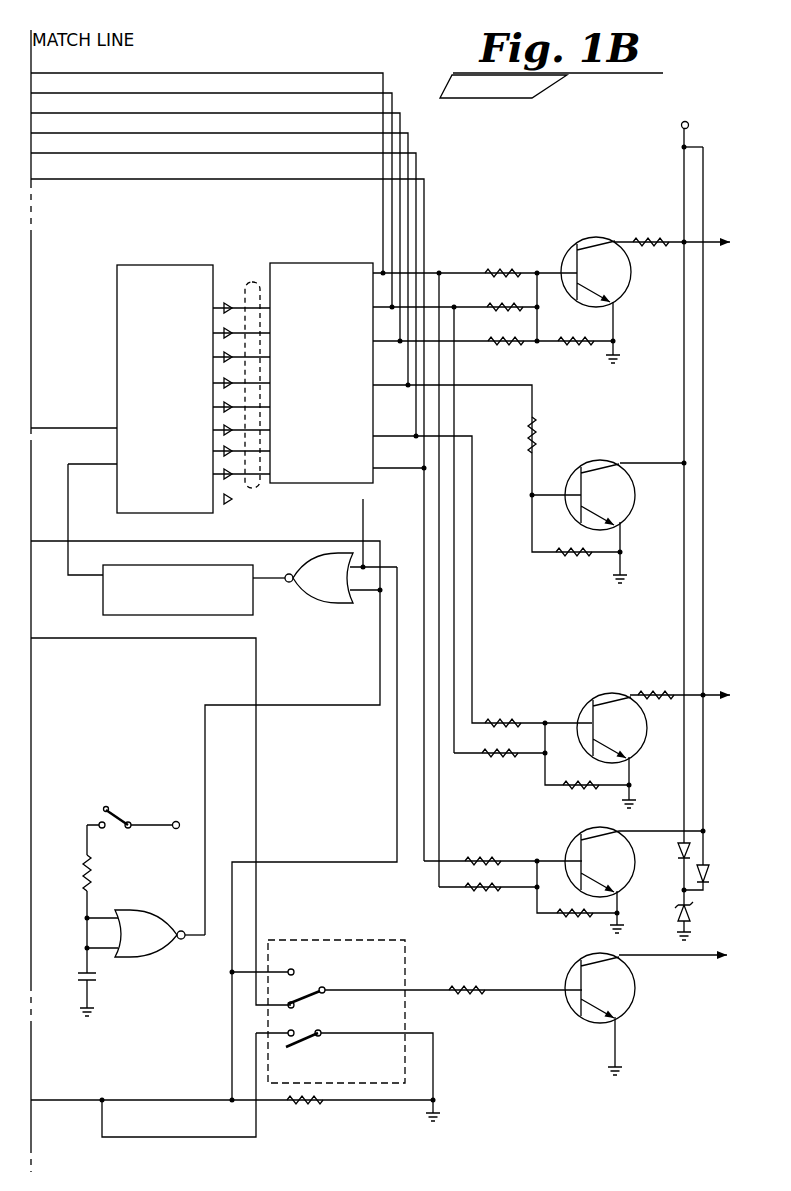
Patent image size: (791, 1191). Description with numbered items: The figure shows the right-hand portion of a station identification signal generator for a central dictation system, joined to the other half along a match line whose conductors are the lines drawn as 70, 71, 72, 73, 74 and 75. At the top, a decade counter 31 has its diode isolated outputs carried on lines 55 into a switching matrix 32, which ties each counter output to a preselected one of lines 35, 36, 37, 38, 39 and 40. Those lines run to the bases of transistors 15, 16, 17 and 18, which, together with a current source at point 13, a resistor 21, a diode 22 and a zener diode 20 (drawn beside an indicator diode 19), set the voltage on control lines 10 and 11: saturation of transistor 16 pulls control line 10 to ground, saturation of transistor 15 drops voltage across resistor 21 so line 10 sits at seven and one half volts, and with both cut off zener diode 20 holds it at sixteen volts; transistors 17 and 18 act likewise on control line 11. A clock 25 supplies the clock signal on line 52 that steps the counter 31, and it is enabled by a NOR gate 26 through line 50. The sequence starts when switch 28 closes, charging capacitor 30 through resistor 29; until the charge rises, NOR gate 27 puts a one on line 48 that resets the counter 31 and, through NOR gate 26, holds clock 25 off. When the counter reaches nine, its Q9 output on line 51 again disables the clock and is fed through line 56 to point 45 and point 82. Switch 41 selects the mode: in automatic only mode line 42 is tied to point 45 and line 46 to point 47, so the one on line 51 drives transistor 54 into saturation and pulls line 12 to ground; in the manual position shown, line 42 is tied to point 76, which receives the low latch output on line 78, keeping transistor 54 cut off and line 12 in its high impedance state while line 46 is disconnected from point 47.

The control line 10 is at (718, 238).
The control line 11 is at (720, 688).
The line 12 is at (693, 958).
The point 13 is at (681, 124).
The transistor 15 is at (595, 238).
The transistor 16 is at (600, 460).
The transistor 17 is at (606, 692).
The transistor 18 is at (583, 822).
The light emitting diode 19 is at (678, 848).
The zener diode 20 is at (677, 920).
The resistor 21 is at (635, 238).
The diode 22 is at (697, 877).
The clock 25 is at (103, 596).
The NOR gate 26 is at (330, 605).
The NOR gate 27 is at (145, 908).
The switch 28 is at (122, 805).
The resistor 29 is at (82, 875).
The capacitor 30 is at (80, 974).
The decade counter 31 is at (117, 320).
The switching matrix 32 is at (330, 262).
The line 35 is at (381, 270).
The line 36 is at (384, 310).
The line 37 is at (387, 346).
The line 38 is at (392, 390).
The line 39 is at (387, 442).
The line 40 is at (402, 472).
The switch 41 is at (360, 938).
The line 42 is at (431, 988).
The point 45 is at (285, 960).
The line 46 is at (435, 1058).
The point 47 is at (307, 1027).
The line 48 is at (195, 938).
The line 50 is at (273, 582).
The line 51 is at (362, 517).
The line 52 is at (68, 512).
The transistor 54 is at (632, 1006).
The lines 55 is at (247, 282).
The line 56 is at (230, 866).
The match line conductor 70 is at (427, 220).
The match line conductor 71 is at (417, 172).
The match line conductor 72 is at (410, 143).
The match line conductor 73 is at (403, 122).
The match line conductor 74 is at (395, 93).
The match line conductor 75 is at (245, 73).
The point 76 is at (300, 1003).
The line 78 is at (115, 640).
The point 82 is at (102, 1098).